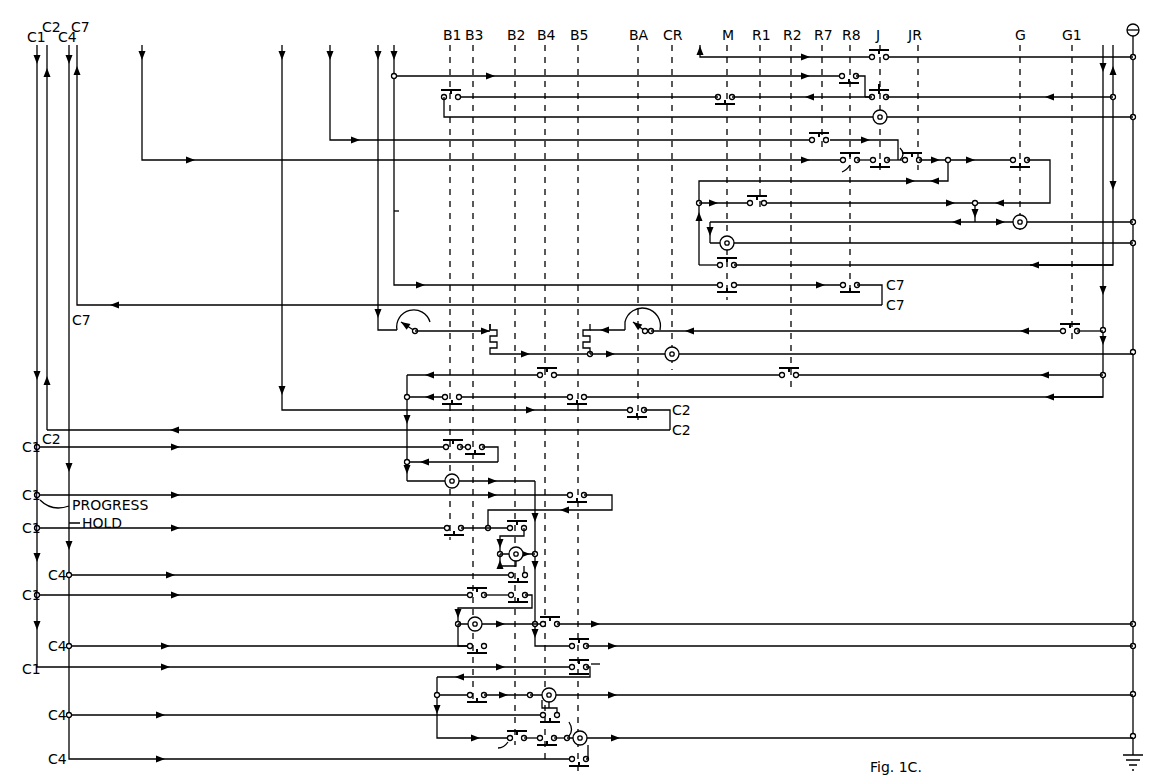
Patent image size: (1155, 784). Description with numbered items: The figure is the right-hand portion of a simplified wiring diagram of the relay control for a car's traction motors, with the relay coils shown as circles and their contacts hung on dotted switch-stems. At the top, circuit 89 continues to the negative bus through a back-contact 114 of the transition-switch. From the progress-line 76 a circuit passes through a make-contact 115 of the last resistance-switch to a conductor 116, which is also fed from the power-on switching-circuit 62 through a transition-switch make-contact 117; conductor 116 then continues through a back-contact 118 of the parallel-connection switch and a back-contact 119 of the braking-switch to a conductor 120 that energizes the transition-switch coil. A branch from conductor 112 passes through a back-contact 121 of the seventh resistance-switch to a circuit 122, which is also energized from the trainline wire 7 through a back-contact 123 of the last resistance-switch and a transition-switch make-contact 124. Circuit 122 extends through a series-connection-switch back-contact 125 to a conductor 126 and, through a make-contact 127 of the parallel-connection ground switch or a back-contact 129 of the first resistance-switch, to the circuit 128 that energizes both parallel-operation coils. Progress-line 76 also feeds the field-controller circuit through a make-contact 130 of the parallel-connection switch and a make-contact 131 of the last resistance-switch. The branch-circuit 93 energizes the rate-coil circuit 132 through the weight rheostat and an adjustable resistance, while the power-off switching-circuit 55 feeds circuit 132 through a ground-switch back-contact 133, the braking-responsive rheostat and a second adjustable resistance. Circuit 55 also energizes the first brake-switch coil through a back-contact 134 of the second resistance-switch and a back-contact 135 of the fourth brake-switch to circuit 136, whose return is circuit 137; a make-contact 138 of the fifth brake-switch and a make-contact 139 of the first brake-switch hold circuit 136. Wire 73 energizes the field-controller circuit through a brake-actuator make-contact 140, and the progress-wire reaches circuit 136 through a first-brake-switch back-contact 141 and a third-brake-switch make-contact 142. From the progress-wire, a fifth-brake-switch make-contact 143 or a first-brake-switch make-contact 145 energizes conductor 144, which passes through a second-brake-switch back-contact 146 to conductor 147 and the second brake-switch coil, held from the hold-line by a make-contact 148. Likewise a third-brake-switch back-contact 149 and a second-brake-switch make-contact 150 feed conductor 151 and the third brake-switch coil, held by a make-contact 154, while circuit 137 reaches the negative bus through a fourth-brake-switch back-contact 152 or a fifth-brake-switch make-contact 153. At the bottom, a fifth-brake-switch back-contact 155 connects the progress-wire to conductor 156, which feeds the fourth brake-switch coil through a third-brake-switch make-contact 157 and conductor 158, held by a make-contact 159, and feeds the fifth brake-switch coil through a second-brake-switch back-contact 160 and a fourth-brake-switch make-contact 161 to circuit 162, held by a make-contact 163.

The trainline wire 7 is at (485, 98).
The power-off switching-circuit 55 is at (1088, 216).
The power-on switching-circuit 62 is at (1084, 142).
The conductor 73 is at (444, 223).
The progress-line 76 is at (610, 164).
The circuit 89 is at (905, 47).
The branch-circuit 93 is at (376, 182).
The conductor 112 is at (600, 93).
The back-contact of the transition-switch J 114 is at (894, 49).
The R8 make-contact 115 is at (845, 77).
The conductor 116 is at (959, 85).
The make-contact of the transition-switch J 117 is at (895, 85).
The back-contact of the parallel-connection switch M 118 is at (717, 90).
The back-contact of the braking-switch B1 119 is at (649, 89).
The conductor 120 is at (774, 111).
The R7 back-contact 121 is at (831, 138).
The circuit 122 is at (898, 140).
The back-contact of the last accelerating-resistance switch R8 123 is at (845, 167).
The make-contact of the transition-switch J 124 is at (881, 162).
The JR back-contact 125 is at (957, 161).
The conductor 126 is at (817, 202).
The make-contact of the parallel-connection switch G 127 is at (1012, 171).
The circuit 128 is at (914, 205).
The back-contact of the resistance-switch R1 129 is at (906, 224).
The make-contact of the parallel-connection switch M 130 is at (921, 264).
The make-contact of the last resistance-switch R8 131 is at (853, 285).
The energizing-circuit of the rate-coil RC 132 is at (765, 341).
The back-contact of the ground-switch G1 133 is at (1072, 329).
The R2 back-contact 134 is at (803, 375).
The B4 back-contact 135 is at (551, 366).
The circuit 136 is at (740, 428).
The circuit 137 is at (547, 562).
The B5 make-contact 138 is at (591, 391).
The B1 make-contact 139 is at (445, 391).
The make-contact of the brake-actuator BA 140 is at (637, 412).
The B1 back-contact 141 is at (446, 439).
The B3 make-contact 142 is at (488, 445).
The B5 make-contact 143 is at (537, 489).
The conductor 144 is at (561, 517).
The B1 make-contact 145 is at (467, 532).
The B2 back-contact 146 is at (510, 532).
The conductor 147 is at (506, 555).
The B2 make-contact 148 is at (508, 583).
The B3 back-contact 149 is at (477, 588).
The B2 make-contact 150 is at (494, 609).
The conductor 151 is at (488, 626).
The B4 back-contact 152 is at (836, 616).
The B5 make-contact 153 is at (851, 638).
The B3 make-contact 154 is at (493, 646).
The B5 back-contact 155 is at (532, 667).
The conductor 156 is at (503, 707).
The B3 make-contact 157 is at (490, 695).
The conductor 158 is at (825, 695).
The B4 make-contact 159 is at (542, 722).
The B2 back-contact 160 is at (506, 736).
The B4 make-contact 161 is at (544, 747).
The circuit 162 is at (845, 724).
The B5 make-contact 163 is at (593, 764).